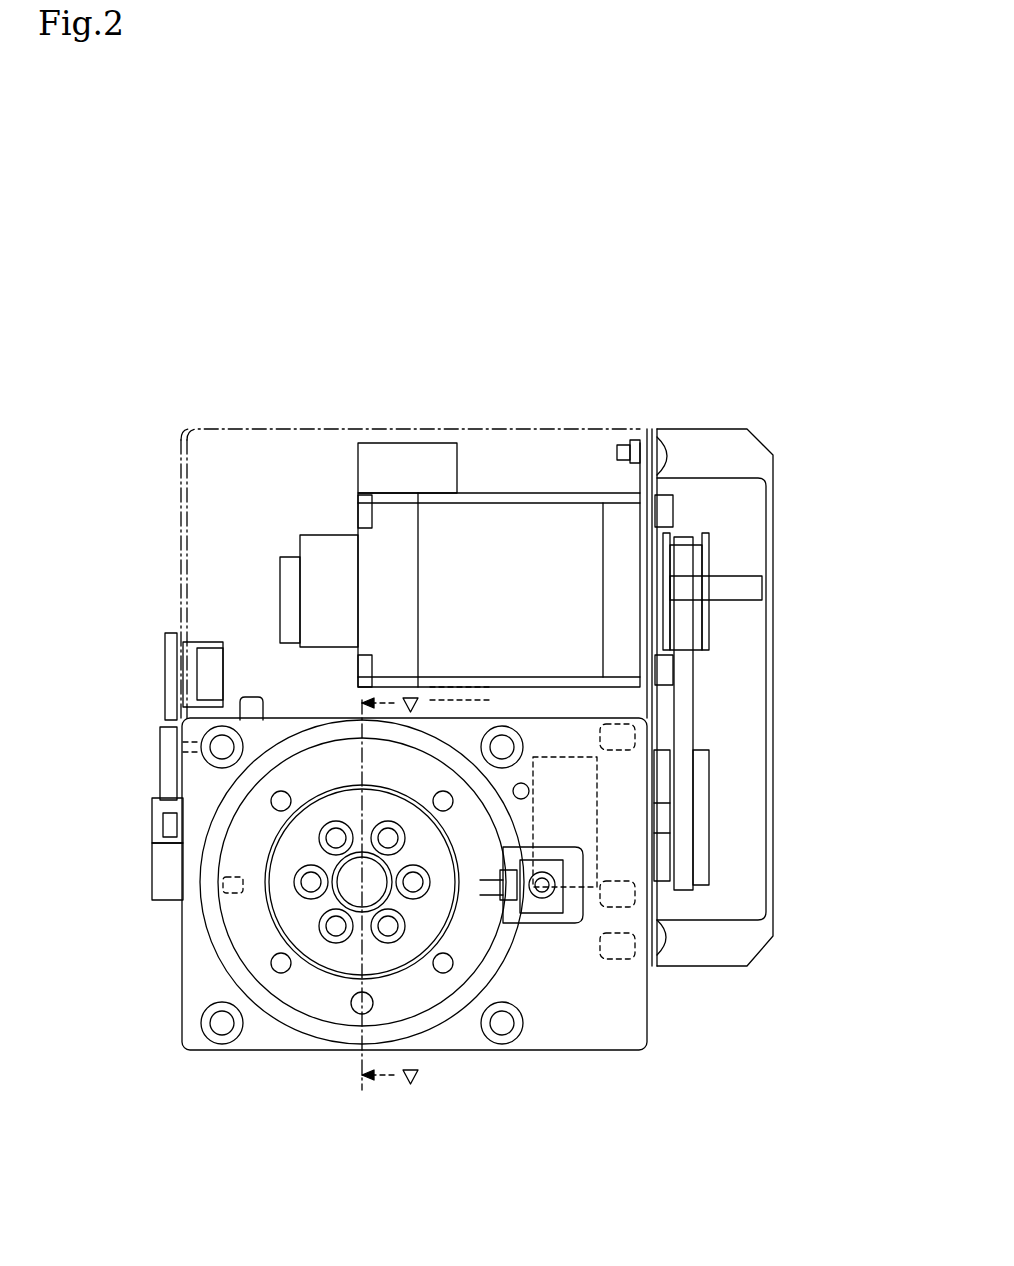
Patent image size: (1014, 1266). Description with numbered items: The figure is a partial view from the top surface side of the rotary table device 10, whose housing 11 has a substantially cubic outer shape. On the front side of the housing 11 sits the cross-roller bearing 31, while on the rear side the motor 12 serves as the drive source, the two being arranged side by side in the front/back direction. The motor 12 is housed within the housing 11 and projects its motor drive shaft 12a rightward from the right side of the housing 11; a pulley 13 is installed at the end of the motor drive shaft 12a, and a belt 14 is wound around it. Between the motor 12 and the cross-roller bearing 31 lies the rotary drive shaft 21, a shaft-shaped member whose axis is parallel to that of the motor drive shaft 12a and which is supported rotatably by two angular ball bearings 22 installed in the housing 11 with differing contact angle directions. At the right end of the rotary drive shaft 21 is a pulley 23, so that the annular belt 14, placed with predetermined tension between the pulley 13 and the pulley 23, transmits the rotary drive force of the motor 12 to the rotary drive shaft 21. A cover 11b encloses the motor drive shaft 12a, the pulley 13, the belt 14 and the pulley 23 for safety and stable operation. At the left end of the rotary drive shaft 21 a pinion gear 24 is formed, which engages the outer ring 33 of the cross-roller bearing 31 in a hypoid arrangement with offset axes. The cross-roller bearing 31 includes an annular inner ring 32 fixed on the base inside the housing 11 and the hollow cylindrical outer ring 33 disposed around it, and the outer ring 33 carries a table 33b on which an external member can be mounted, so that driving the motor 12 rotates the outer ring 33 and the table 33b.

The rotary table device 10 is at (636, 308).
The housing 11 is at (294, 416).
The cover 11b is at (771, 810).
The motor 12 is at (510, 533).
The motor drive shaft 12a is at (736, 575).
The pulley 13 is at (712, 536).
The belt 14 is at (690, 711).
The rotary drive shaft 21 is at (457, 700).
The angular ball bearing 22 is at (573, 890).
The pulley 23 is at (707, 862).
The pinion gear 24 is at (520, 917).
The cross-roller bearing 31 is at (324, 1013).
The inner ring 32 is at (303, 853).
The outer ring 33 is at (292, 997).
The table 33b is at (362, 902).